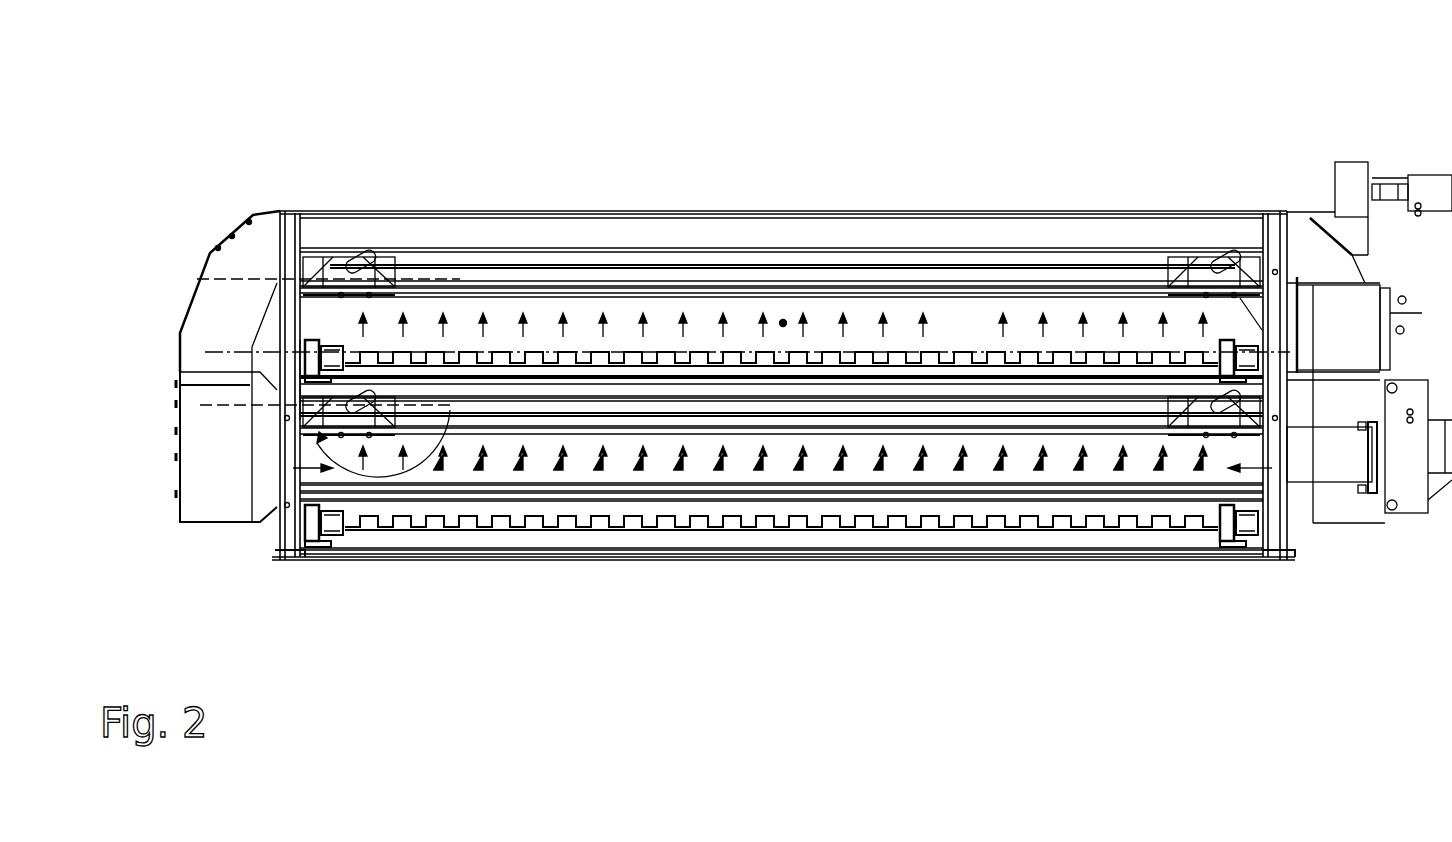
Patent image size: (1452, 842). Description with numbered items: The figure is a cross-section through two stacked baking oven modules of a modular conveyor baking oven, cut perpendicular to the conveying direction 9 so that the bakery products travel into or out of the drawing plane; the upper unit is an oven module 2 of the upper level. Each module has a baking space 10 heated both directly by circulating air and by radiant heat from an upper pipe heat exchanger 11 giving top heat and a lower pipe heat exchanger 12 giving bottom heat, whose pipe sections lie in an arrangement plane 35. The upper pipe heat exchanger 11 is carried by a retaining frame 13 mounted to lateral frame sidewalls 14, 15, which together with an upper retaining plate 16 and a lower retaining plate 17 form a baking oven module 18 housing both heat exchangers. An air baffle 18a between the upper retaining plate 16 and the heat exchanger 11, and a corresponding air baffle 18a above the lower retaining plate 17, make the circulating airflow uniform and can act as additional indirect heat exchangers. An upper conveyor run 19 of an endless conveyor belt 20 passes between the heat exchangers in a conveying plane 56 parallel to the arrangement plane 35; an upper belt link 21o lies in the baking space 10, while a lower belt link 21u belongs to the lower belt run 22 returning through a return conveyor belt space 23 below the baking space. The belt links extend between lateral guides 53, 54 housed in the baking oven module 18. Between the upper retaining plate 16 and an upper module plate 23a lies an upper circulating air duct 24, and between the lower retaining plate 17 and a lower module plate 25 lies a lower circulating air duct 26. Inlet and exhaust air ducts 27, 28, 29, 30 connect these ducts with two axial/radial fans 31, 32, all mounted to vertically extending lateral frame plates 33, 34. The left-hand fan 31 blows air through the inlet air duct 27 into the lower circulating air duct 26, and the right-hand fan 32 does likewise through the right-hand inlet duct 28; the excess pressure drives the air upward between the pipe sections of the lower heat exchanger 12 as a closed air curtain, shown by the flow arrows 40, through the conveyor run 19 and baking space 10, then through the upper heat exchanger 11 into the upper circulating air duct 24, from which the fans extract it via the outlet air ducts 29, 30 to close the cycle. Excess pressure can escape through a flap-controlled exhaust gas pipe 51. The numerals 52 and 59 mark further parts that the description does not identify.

The oven module 2 is at (1057, 185).
The conveying direction 9 is at (783, 323).
The baking space 10 is at (945, 338).
The upper pipe coil heat exchanger 11 is at (1003, 268).
The lower pipe coil heat exchanger 12 is at (1018, 505).
The retaining frame 13 is at (453, 290).
The frame sidewall 14 is at (293, 307).
The frame sidewall 15 is at (1275, 215).
The upper retaining plate 16 is at (640, 250).
The lower retaining plate 17 is at (955, 425).
The baking oven module 18 is at (940, 248).
The air baffle 18a is at (388, 262).
The upper conveyor run 19 is at (761, 229).
The endless conveyor belt 20 is at (781, 404).
The upper belt link 21o is at (717, 352).
The lower belt link 21u is at (1095, 422).
The lower belt run 22 is at (753, 532).
The return conveyor belt space 23 is at (865, 540).
The upper module plate 23a is at (905, 212).
The upper circulating air duct 24 is at (383, 215).
The lower module plate 25 is at (800, 557).
The lower circulating air duct 26 is at (638, 462).
The inlet air duct 27 is at (335, 472).
The inlet air duct 28 is at (1338, 470).
The outlet air duct 29 is at (220, 218).
The outlet air duct 30 is at (1302, 233).
The axial/radial fan 31 is at (227, 503).
The axial/radial fan 32 is at (1408, 500).
The lateral frame plate 33 is at (290, 545).
The lateral frame plate 34 is at (1267, 560).
The arrangement plane 35 is at (223, 272).
The flow arrows 40 is at (682, 330).
The flap-controlled exhaust gas pipe 51 is at (1357, 163).
The upper left drive 52 is at (513, 350).
The lateral guide 53 is at (280, 213).
The lateral guide 54 is at (1230, 330).
The conveying plane 56 is at (759, 400).
The gear box 59 is at (1354, 400).